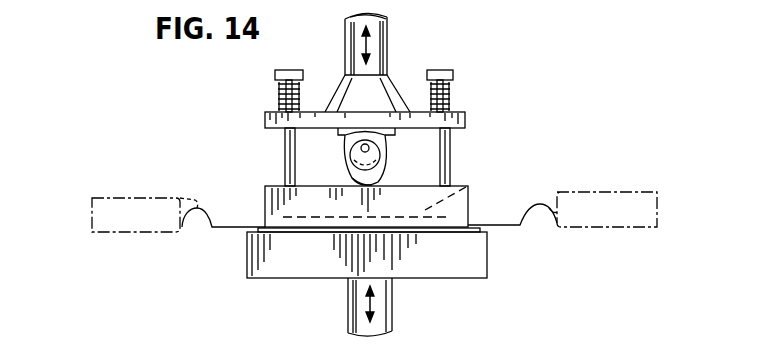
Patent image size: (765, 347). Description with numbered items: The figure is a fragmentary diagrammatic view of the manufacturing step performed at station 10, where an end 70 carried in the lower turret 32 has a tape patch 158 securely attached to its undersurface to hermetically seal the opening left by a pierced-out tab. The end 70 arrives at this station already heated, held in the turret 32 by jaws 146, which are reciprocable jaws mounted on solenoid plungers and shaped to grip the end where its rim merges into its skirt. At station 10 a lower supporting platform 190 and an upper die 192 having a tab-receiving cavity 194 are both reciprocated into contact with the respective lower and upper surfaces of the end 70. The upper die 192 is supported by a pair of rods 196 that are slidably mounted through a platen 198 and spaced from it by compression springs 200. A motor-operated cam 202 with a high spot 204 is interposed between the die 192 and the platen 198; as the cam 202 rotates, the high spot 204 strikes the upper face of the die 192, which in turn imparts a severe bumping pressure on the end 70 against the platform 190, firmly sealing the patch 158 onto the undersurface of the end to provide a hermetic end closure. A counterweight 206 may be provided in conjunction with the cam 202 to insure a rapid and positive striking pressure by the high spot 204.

The station 10 is at (223, 191).
The lower turret 32 is at (128, 228).
The end 70 is at (498, 224).
The jaws 146 is at (551, 195).
The tape patch 158 is at (262, 232).
The lower supporting platform 190 is at (303, 272).
The upper die 192 is at (283, 197).
The tab-receiving cavity 194 is at (466, 186).
The rods 196 is at (285, 143).
The platen 198 is at (466, 113).
The compression springs 200 is at (278, 101).
The motor-operated cam 202 is at (375, 157).
The high spot 204 is at (349, 178).
The counterweight 206 is at (342, 131).